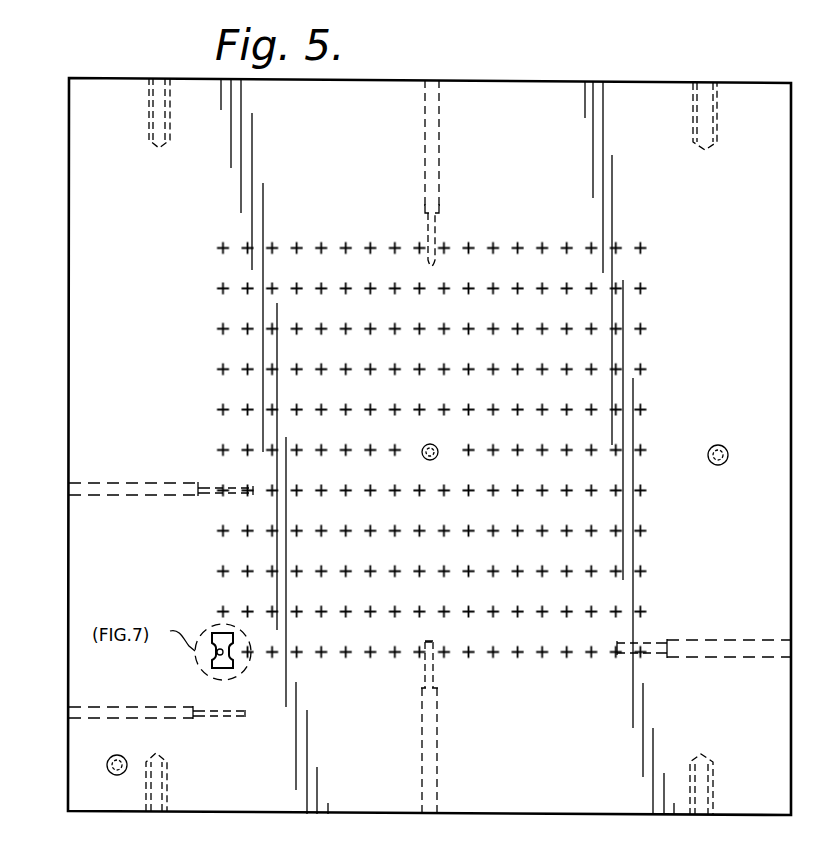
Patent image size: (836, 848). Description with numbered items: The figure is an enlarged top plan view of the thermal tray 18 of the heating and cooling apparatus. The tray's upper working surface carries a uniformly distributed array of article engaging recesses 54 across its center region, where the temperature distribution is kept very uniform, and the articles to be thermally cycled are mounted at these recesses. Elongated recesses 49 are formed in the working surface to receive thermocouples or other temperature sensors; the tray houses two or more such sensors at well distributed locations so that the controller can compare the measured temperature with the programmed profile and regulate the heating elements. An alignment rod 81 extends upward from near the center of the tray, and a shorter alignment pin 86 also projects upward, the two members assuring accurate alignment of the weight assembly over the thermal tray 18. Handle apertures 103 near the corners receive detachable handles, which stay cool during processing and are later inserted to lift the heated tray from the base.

The thermal tray 18 is at (66, 127).
The recess 49 is at (441, 137).
The article engaging recesses 54 is at (270, 246).
The alignment rod 81 is at (433, 444).
The alignment pin 86 is at (718, 466).
The handle apertures 103 is at (160, 78).